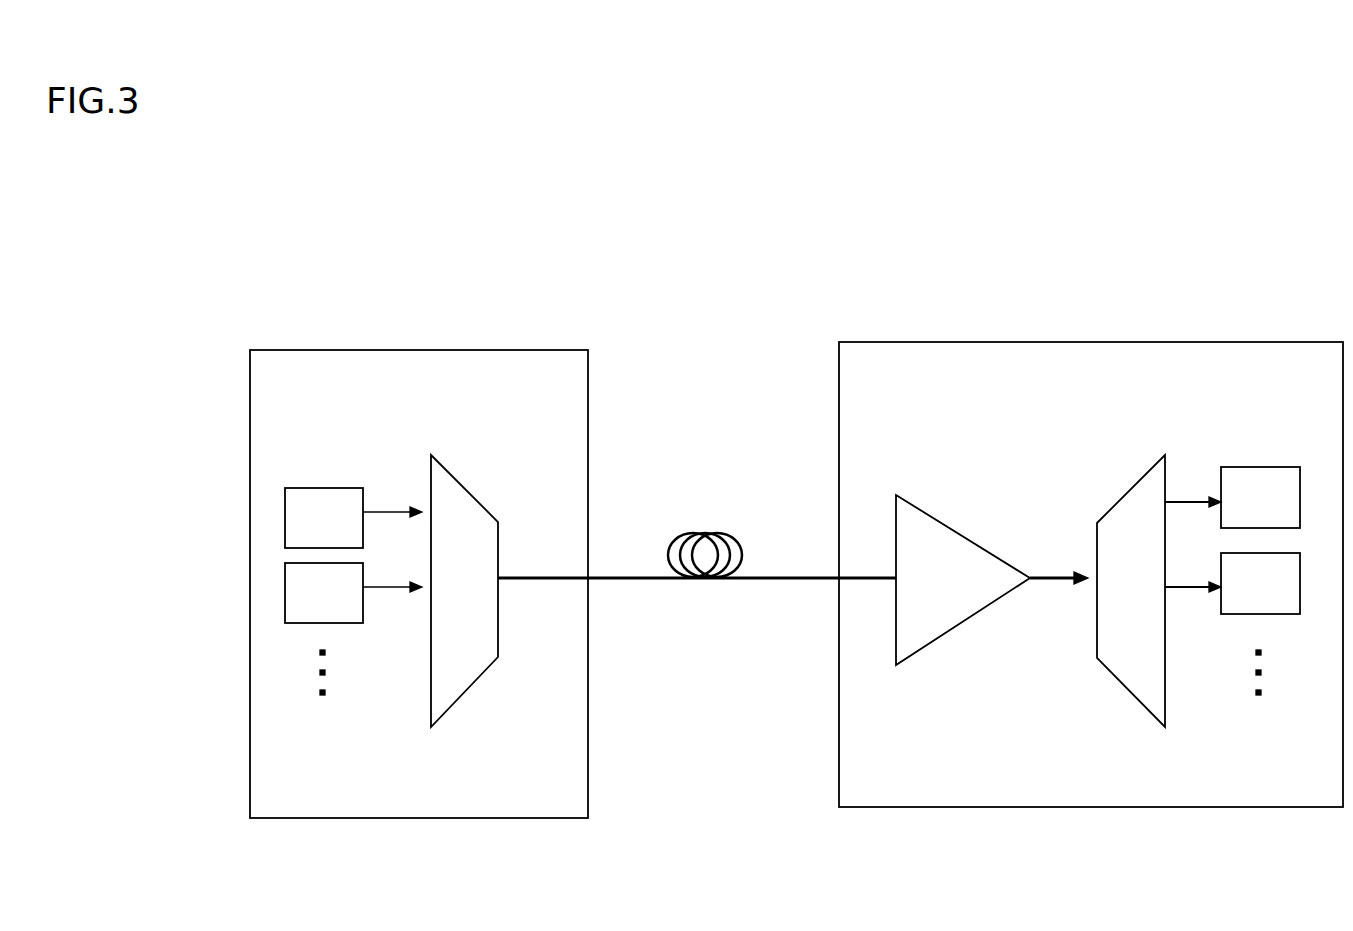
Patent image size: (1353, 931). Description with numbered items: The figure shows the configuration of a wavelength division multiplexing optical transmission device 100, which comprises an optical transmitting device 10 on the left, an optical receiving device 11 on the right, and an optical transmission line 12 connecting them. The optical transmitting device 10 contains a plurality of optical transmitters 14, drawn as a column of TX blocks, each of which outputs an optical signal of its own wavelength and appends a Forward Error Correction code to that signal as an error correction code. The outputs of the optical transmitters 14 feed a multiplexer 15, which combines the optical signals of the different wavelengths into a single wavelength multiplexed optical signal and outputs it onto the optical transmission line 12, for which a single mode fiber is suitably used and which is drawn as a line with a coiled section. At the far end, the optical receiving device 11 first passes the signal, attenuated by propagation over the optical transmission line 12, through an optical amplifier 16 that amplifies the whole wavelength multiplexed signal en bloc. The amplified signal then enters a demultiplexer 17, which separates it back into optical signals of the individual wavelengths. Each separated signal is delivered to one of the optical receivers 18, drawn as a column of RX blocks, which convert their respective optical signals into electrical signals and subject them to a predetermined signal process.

The optical transmission device 100 is at (722, 293).
The optical transmitting device 10 is at (425, 350).
The optical receiving device 11 is at (1085, 341).
The optical transmission line 12 is at (712, 533).
The optical transmitter 14 is at (325, 474).
The multiplexer 15 is at (462, 487).
The optical amplifier 16 is at (922, 512).
The demultiplexer 17 is at (1122, 498).
The optical receiver 18 is at (1266, 452).